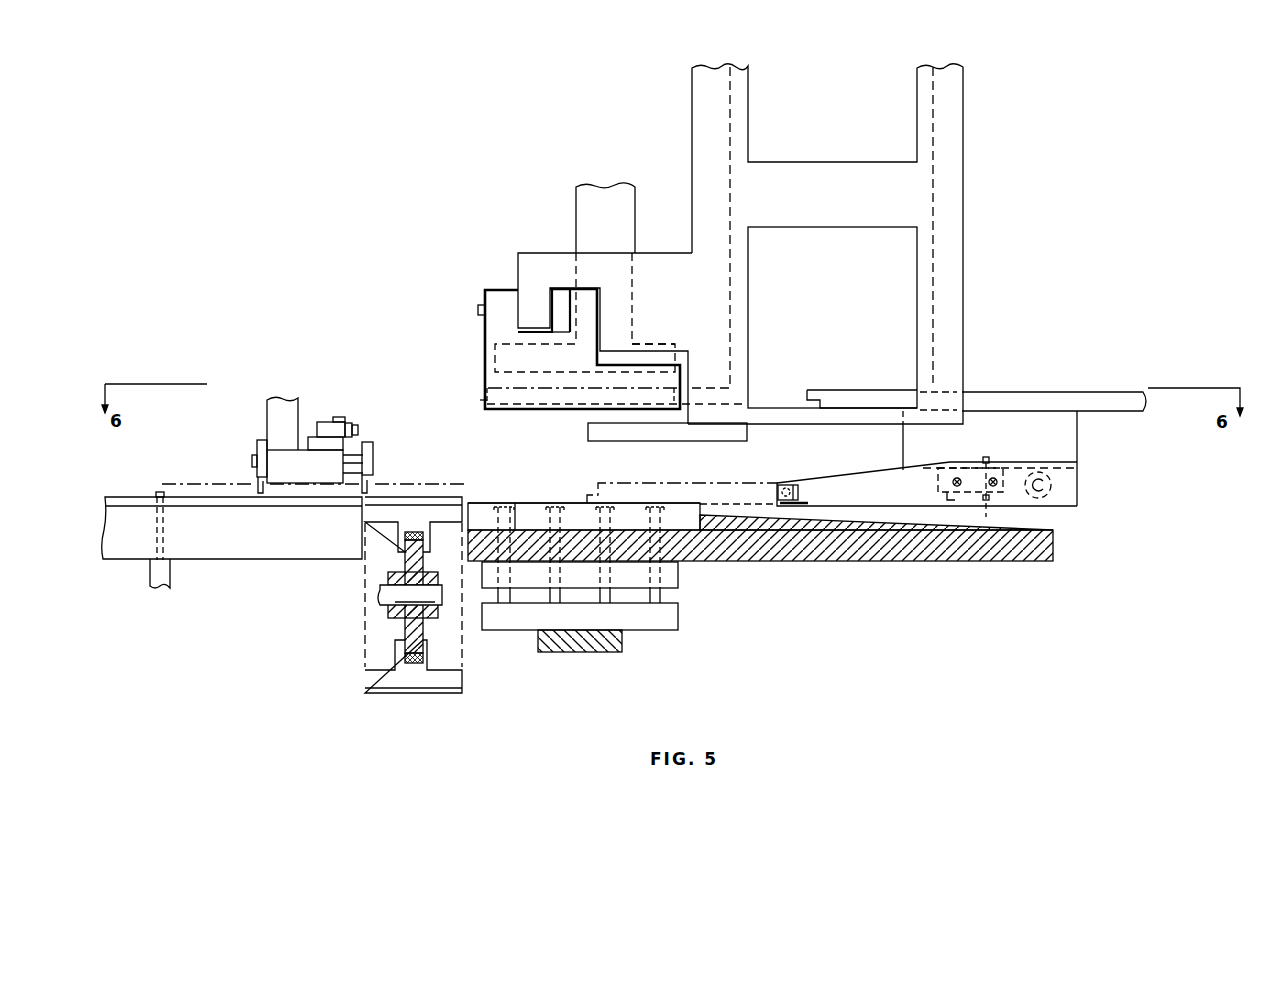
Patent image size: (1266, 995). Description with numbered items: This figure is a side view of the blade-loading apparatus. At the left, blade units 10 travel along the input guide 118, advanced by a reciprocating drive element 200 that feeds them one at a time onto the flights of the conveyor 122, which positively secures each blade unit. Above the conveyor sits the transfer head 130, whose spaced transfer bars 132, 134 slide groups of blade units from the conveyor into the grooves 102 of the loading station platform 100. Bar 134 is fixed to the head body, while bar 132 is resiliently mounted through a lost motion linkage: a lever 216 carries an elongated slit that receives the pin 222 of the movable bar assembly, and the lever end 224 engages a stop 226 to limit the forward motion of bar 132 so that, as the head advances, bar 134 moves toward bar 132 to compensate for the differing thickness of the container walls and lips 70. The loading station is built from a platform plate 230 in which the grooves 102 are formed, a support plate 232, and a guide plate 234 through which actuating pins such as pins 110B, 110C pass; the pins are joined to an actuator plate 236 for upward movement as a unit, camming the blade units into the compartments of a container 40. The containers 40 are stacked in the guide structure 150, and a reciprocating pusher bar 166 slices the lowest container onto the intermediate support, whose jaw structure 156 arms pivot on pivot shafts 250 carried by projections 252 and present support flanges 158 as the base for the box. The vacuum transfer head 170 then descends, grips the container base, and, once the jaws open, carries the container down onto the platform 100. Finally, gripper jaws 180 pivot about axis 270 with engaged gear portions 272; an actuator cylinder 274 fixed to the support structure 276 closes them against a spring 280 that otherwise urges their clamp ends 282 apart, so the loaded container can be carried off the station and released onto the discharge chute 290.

The blade unit 10 is at (173, 482).
The container 40 is at (490, 382).
The lips 70 is at (483, 400).
The loading station platform 100 is at (552, 498).
The grooves 102 is at (518, 508).
The corner actuating pin 110B is at (507, 593).
The corner actuating pin 110C is at (650, 593).
The input guide 118 is at (218, 560).
The conveyor 122 is at (366, 673).
The transfer head 130 is at (311, 406).
The transfer bar 132 is at (368, 477).
The transfer bar 134 is at (258, 480).
The guide structure 150 is at (966, 131).
The jaw structure 156 is at (485, 333).
The support flange 158 is at (509, 414).
The pusher bar 166 is at (855, 390).
The transfer head 170 is at (488, 355).
The gripper jaws 180 is at (847, 475).
The drive element 200 is at (158, 594).
The lever 216 is at (322, 421).
The pin 222 is at (338, 417).
The lever end 224 is at (358, 431).
The stop 226 is at (588, 435).
The platform plate 230 is at (477, 508).
The support plate 232 is at (743, 553).
The guide plate 234 is at (677, 577).
The actuator plate 236 is at (677, 617).
The pivot shaft 250 is at (478, 310).
The projections 252 is at (518, 253).
The axis 270 is at (990, 455).
The gear portions 272 is at (938, 480).
The actuator cylinder 274 is at (1053, 486).
The support structure 276 is at (1077, 446).
The spring 280 is at (947, 498).
The clamp ends 282 is at (770, 483).
The discharge chute 290 is at (868, 514).